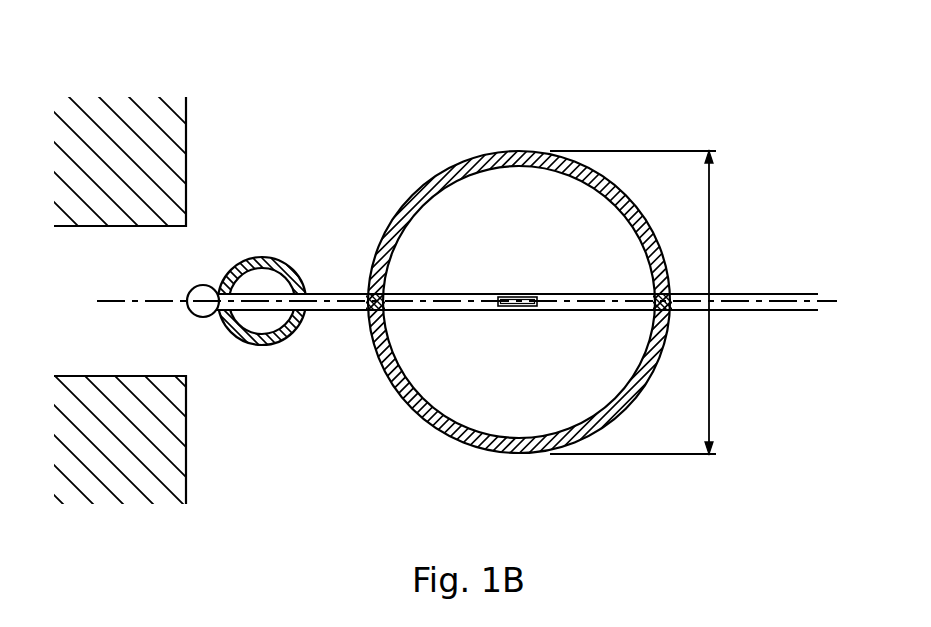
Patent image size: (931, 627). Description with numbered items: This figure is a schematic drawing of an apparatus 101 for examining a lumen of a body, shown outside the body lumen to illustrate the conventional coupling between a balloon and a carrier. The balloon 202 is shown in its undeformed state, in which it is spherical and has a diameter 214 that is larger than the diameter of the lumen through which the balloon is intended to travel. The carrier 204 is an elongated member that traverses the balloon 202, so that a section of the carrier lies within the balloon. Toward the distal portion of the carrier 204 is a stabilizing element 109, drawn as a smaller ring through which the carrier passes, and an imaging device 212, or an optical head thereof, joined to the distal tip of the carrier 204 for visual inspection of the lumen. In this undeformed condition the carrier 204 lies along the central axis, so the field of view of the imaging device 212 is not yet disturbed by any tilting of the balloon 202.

The apparatus 101 is at (272, 104).
The stabilizing element 109 is at (277, 342).
The balloon 202 is at (472, 160).
The carrier 204 is at (748, 310).
The imaging device 212 is at (193, 317).
The diameter D of the balloon 214 is at (710, 229).